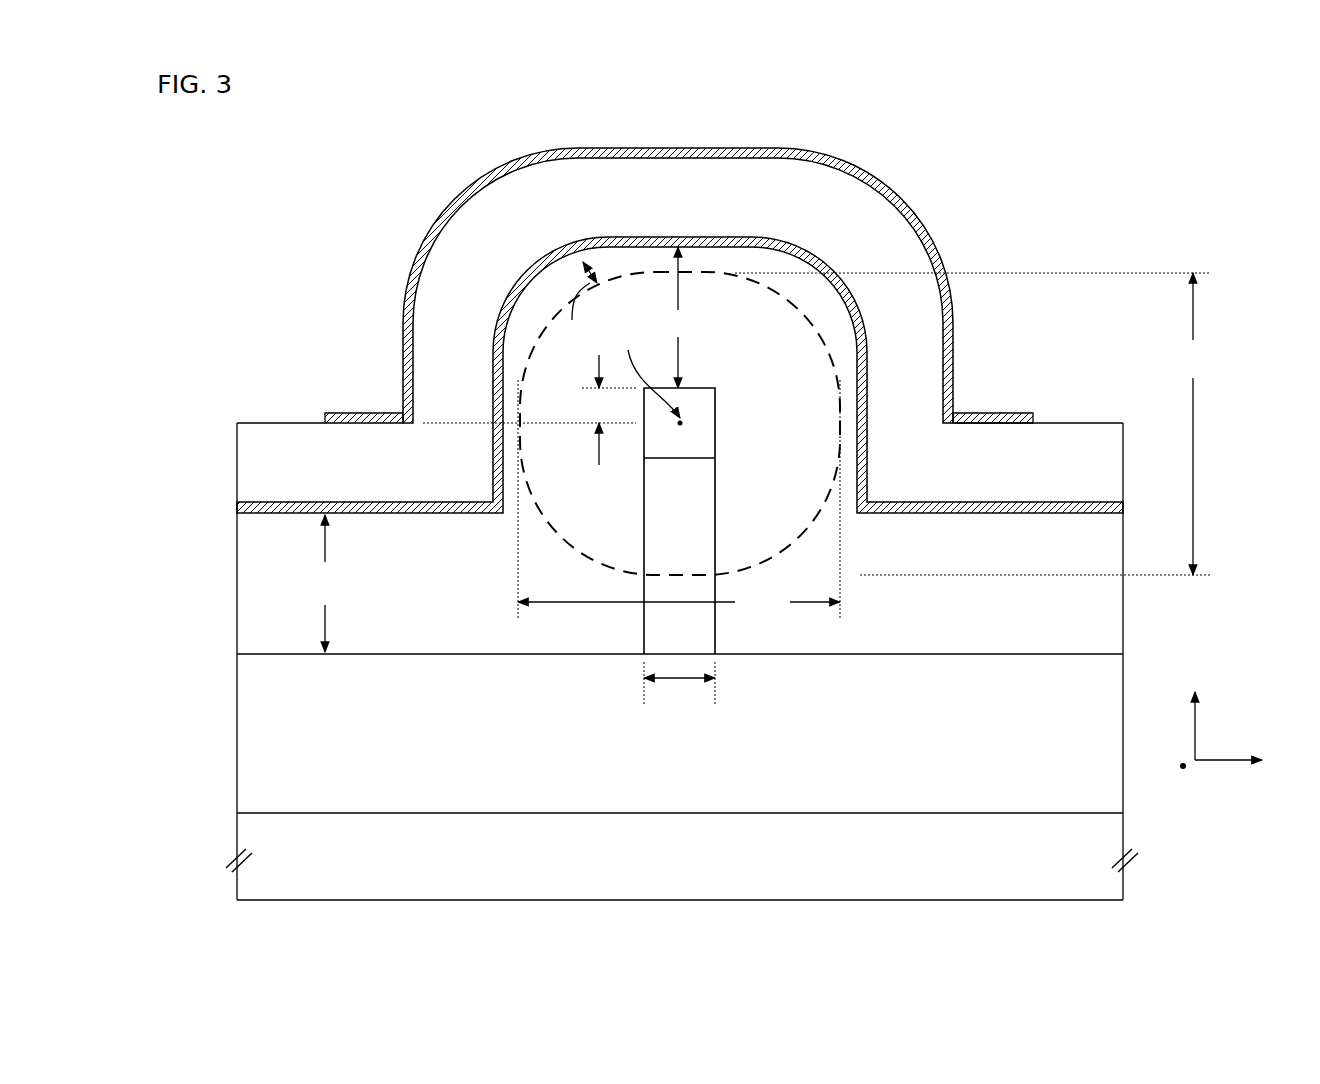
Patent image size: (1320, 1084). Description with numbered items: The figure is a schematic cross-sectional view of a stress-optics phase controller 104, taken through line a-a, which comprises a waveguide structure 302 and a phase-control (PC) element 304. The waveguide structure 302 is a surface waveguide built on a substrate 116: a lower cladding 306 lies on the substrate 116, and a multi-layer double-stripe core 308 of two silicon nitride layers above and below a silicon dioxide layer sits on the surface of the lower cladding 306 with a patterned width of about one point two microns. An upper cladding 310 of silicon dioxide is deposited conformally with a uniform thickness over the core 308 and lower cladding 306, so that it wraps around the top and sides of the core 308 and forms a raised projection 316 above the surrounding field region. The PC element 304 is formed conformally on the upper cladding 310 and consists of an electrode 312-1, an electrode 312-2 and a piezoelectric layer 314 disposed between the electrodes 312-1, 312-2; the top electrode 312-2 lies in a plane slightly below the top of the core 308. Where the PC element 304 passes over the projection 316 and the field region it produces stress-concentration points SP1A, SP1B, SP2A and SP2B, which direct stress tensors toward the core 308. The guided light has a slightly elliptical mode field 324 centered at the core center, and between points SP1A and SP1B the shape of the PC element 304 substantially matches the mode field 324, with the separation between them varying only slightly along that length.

The phase controller 104 is at (233, 173).
The waveguide structure 302 is at (220, 700).
The phase-control (PC) element 304 is at (963, 193).
The lower cladding 306 is at (1100, 801).
The core 308 is at (707, 405).
The upper cladding 310 is at (1100, 641).
The electrode 312-1 is at (545, 270).
The electrode 312-2 is at (427, 255).
The piezoelectric layer 314 is at (440, 343).
The projection 316 is at (820, 318).
The mode field 324 is at (752, 278).
The substrate 116 is at (1098, 887).
The stress-concentration point SP1A is at (497, 518).
The stress-concentration point SP1B is at (862, 517).
The stress-concentration point SP2A is at (395, 403).
The stress-concentration point SP2B is at (963, 408).